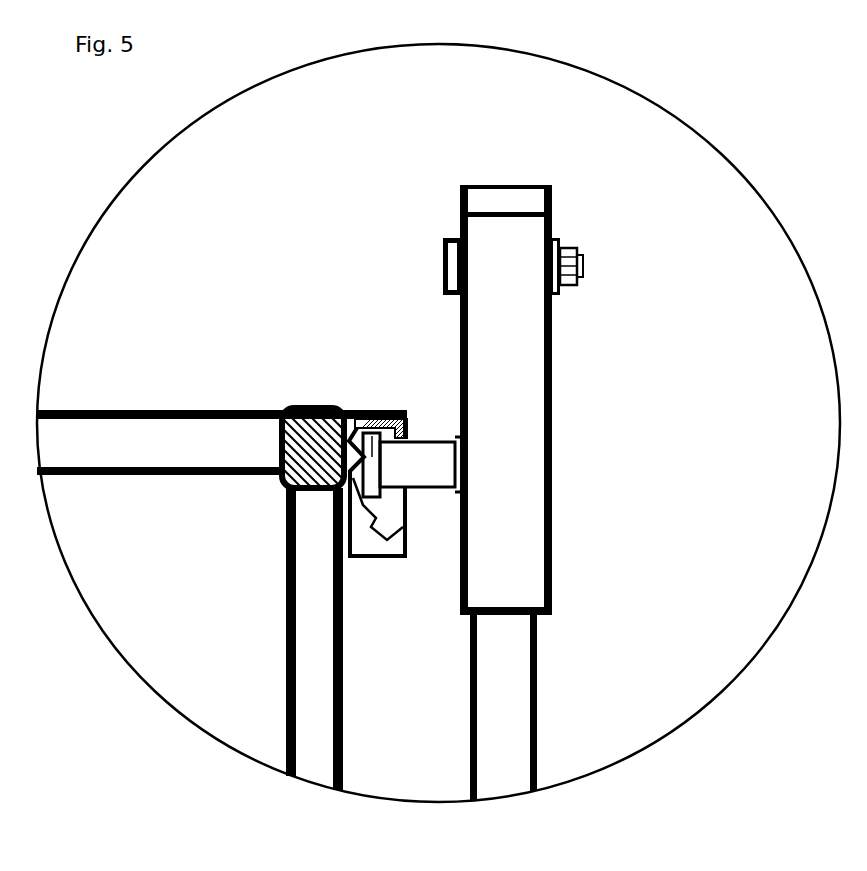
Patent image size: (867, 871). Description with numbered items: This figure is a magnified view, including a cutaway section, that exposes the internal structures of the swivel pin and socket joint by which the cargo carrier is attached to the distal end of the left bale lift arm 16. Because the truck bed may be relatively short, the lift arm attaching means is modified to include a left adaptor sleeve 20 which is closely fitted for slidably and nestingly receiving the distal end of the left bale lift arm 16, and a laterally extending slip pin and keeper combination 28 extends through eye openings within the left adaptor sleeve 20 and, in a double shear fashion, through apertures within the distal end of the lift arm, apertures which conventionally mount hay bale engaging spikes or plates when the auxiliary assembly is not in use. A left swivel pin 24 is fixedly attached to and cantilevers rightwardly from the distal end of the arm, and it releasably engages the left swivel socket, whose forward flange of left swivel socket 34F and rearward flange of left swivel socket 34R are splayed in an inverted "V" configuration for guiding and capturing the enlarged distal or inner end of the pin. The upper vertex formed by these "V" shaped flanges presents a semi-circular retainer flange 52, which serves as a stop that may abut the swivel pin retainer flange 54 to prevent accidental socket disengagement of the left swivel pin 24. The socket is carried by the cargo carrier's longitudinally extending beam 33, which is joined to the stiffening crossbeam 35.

The left bale lift arm 16 is at (518, 738).
The left adaptor sleeve 20 is at (530, 482).
The left swivel pin 24 is at (432, 462).
The slip pin and keeper combination 28 is at (583, 266).
The longitudinally extending beam 33 is at (300, 463).
The forward flange of left swivel socket 34F is at (373, 555).
The rearward flange of left swivel socket 34R is at (410, 510).
The stiffening crossbeam 35 is at (155, 435).
The semi-circular retainer flange 52 is at (408, 428).
The swivel pin retainer flange 54 is at (372, 433).